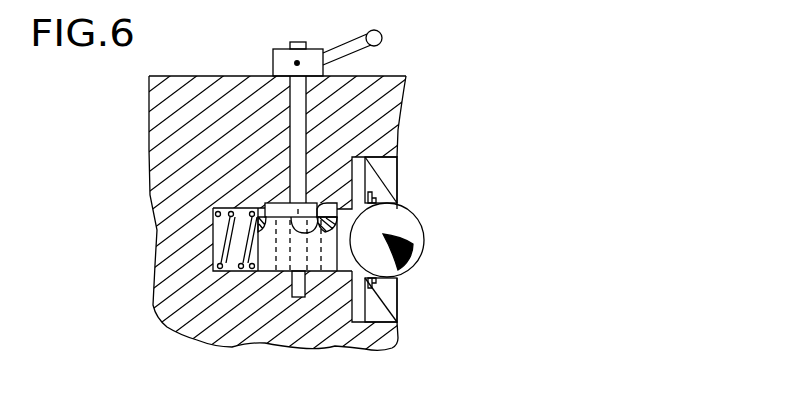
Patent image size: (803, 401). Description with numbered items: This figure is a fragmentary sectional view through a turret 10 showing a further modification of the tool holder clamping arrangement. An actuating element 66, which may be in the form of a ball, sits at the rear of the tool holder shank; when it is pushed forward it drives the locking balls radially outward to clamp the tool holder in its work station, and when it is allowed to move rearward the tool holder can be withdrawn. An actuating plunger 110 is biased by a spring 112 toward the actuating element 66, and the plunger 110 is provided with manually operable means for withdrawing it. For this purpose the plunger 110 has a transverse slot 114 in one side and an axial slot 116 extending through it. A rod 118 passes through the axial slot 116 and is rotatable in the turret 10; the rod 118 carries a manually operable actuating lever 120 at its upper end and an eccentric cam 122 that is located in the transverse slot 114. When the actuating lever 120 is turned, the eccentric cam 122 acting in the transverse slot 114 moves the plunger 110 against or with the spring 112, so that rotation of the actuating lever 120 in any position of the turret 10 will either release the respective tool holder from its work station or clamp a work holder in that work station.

The turret 10 is at (399, 108).
The actuating element 66 is at (418, 228).
The actuating plunger 110 is at (322, 262).
The spring 112 is at (226, 242).
The transverse slot 114 is at (322, 204).
The axial slot 116 is at (280, 222).
The rod 118 is at (302, 133).
The actuating lever 120 is at (383, 29).
The eccentric cam 122 is at (322, 236).